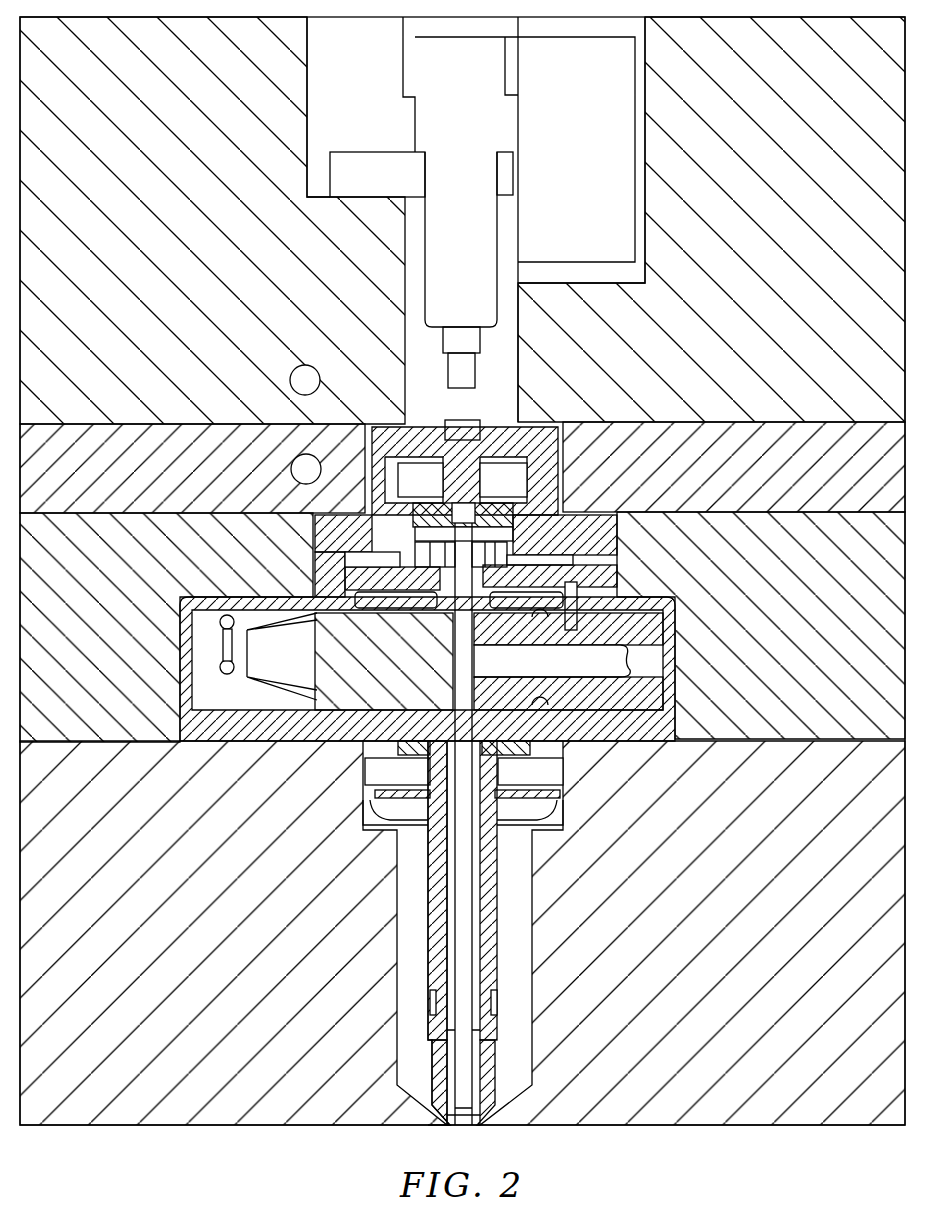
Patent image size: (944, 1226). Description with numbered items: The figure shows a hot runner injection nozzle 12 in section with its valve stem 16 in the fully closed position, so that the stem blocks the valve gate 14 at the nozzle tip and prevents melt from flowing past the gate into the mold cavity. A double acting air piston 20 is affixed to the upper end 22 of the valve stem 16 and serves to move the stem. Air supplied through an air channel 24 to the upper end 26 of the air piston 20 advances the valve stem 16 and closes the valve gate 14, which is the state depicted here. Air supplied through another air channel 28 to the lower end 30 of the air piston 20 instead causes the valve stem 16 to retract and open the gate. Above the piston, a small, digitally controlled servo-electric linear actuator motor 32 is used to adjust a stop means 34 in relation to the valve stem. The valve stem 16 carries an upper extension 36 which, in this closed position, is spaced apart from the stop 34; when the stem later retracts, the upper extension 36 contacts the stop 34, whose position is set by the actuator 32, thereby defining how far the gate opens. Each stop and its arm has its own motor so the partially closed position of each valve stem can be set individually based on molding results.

The hot runner injection nozzle 12 is at (437, 907).
The valve gate 14 is at (447, 1125).
The valve stem 16 is at (465, 878).
The double acting air piston 20 is at (503, 505).
The upper end of valve stem 22 is at (460, 603).
The air channel 24 is at (353, 562).
The upper end of air piston 26 is at (440, 482).
The air channel 28 is at (573, 560).
The lower end of air piston 30 is at (507, 560).
The servo-electric linear actuator motor 32 is at (600, 190).
The stop means 34 is at (447, 372).
The upper extension 36 is at (470, 428).